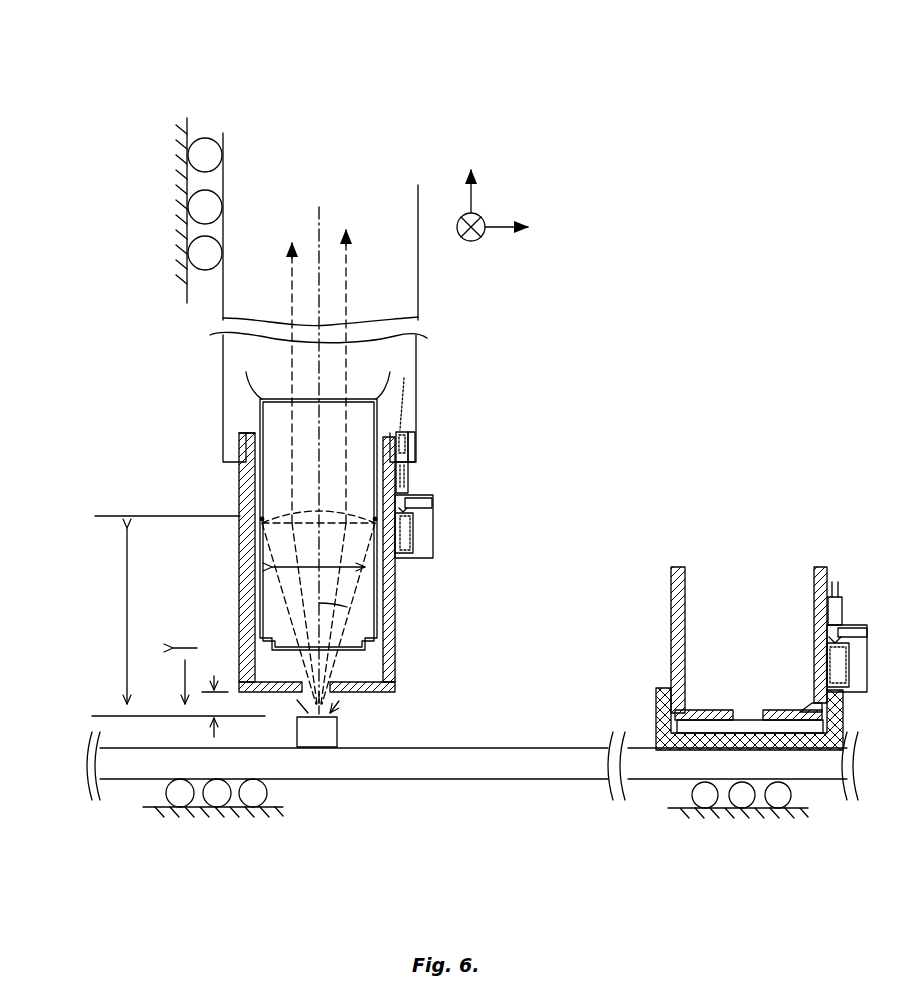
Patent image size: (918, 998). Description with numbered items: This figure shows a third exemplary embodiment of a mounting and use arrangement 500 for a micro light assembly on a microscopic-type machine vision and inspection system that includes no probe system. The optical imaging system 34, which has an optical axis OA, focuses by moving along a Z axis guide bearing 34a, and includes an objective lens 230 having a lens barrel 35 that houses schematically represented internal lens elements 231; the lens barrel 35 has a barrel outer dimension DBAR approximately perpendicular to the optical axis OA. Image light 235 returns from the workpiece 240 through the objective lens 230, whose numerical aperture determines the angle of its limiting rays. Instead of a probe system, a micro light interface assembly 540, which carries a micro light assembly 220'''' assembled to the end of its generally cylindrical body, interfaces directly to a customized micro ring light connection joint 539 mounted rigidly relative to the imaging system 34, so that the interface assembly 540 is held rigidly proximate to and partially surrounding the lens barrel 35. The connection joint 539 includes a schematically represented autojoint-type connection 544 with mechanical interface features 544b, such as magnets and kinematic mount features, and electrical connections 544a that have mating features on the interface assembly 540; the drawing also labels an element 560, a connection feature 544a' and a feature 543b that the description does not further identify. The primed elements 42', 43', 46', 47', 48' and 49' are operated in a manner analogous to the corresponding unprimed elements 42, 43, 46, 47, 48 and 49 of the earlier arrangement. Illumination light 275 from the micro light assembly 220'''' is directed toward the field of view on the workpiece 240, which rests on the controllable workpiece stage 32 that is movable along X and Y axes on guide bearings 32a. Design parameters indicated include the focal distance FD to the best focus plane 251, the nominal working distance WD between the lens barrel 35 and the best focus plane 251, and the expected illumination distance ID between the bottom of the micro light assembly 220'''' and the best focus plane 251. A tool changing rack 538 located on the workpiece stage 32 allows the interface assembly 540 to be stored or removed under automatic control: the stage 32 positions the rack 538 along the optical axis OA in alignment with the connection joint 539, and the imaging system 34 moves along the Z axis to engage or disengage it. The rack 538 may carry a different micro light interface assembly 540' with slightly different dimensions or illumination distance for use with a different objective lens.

The mounting and use arrangement 500 is at (611, 78).
The Z axis guide bearing 34a is at (207, 132).
The optical imaging system 34 is at (220, 297).
The optical axis OA is at (323, 215).
The image light 235 is at (291, 300).
The micro ring light connection joint 539 is at (227, 393).
The objective lens 230 is at (381, 417).
The lens barrel 35 is at (262, 518).
The internal lens elements 231 is at (240, 517).
The barrel outer dimension DBAR is at (264, 567).
The focused beam cone 560 is at (310, 684).
The micro light interface assembly 540 is at (304, 558).
The mechanical interface features 544b is at (240, 437).
The electrical connections 544a is at (442, 445).
The connector pin 544a' is at (443, 477).
The autojoint-type connection 544 is at (490, 427).
The primed element 49' is at (488, 544).
The primed element 48' is at (466, 517).
The primed element 43' is at (460, 531).
The primed element 46' is at (463, 543).
The primed element 47' is at (457, 555).
The primed element 42' is at (452, 626).
The micro light assembly 220'''' is at (608, 698).
The focal distance FD is at (127, 590).
The nominal working distance WD is at (185, 655).
The expected illumination distance ID is at (213, 735).
The best focus plane 251 is at (97, 713).
The illumination light 275 is at (337, 705).
The workpiece 240 is at (320, 733).
The workpiece stage 32 is at (477, 782).
The guide bearings 32a is at (142, 790).
The different micro light interface assembly 540' is at (711, 640).
The tool changing rack 538 is at (657, 698).
The unprimed element 42 is at (784, 698).
The unprimed element 49 is at (847, 598).
The unprimed element 48 is at (847, 583).
The connector pins 543b is at (830, 618).
The unprimed element 43 is at (800, 621).
The unprimed element 46 is at (798, 656).
The unprimed element 47 is at (799, 665).
The Z axis Z is at (471, 175).
The X axis X is at (527, 228).
The Y axis Y is at (469, 237).